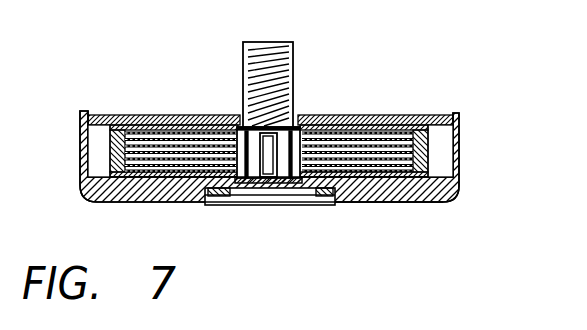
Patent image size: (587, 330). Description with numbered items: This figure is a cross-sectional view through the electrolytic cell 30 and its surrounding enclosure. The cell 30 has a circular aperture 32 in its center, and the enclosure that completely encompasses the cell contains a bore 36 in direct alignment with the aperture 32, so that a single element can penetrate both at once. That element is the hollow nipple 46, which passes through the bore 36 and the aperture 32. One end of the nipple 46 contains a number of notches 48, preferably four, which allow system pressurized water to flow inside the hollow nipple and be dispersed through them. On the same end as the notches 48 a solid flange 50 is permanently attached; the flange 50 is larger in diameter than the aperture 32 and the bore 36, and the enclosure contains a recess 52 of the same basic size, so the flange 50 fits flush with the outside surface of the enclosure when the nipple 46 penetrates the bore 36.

The electrolytic cell 30 is at (363, 116).
The circular aperture 32 is at (170, 114).
The bore 36 is at (210, 204).
The nipple 46 is at (245, 42).
The notches 48 is at (273, 160).
The solid flange 50 is at (267, 205).
The recess 52 is at (365, 204).